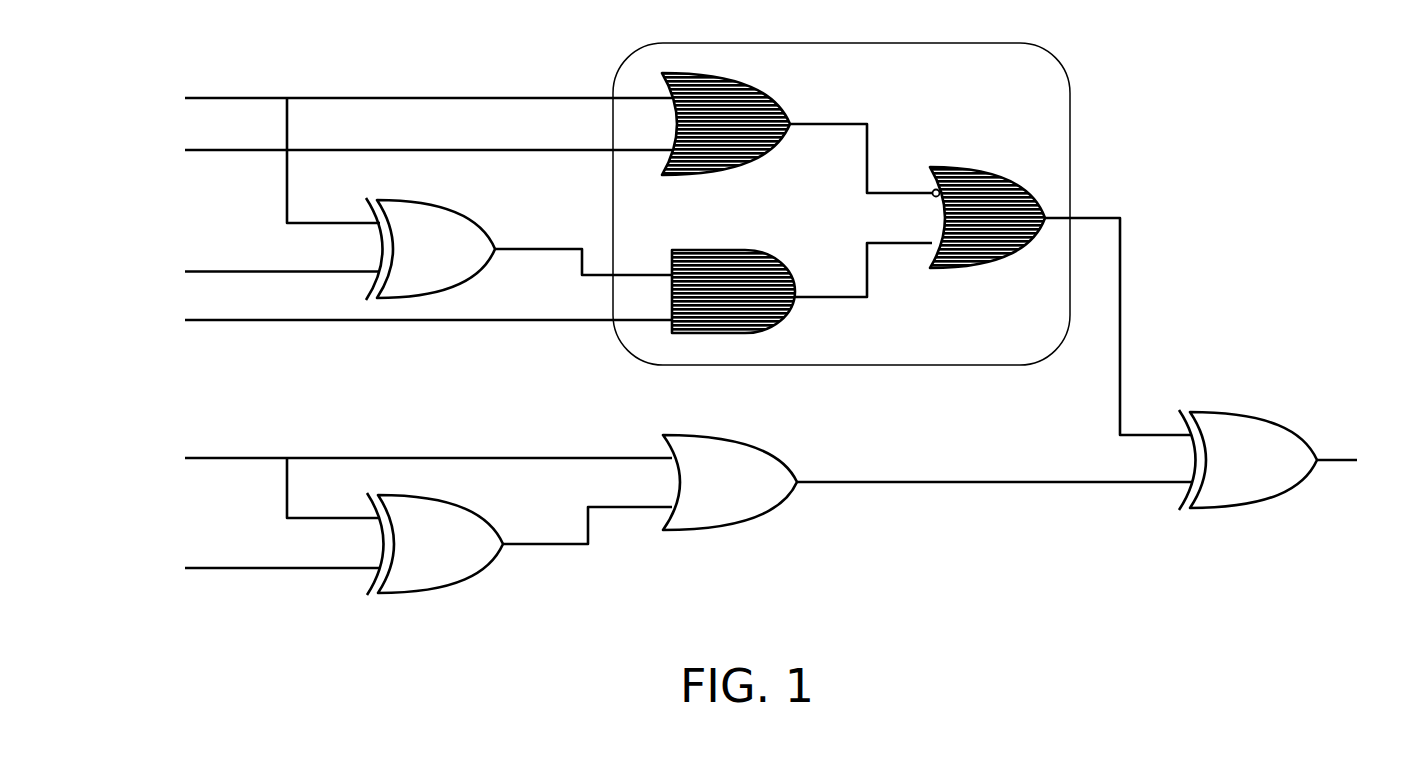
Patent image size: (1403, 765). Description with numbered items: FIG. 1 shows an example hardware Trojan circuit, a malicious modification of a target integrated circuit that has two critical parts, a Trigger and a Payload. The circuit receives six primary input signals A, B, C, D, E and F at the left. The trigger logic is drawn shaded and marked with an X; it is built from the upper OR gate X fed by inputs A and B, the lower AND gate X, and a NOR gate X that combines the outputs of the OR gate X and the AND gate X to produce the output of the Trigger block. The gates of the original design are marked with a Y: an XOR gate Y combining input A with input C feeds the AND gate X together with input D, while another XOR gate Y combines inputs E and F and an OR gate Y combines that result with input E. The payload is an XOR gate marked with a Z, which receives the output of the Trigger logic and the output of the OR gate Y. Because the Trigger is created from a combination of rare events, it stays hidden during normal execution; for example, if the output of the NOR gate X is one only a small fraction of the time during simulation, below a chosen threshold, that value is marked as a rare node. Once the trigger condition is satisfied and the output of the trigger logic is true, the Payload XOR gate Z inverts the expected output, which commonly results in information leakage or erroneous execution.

The input signal A is at (408, 149).
The input signal B is at (408, 149).
The input signal C is at (262, 258).
The input signal D is at (408, 316).
The input signal E is at (408, 475).
The input signal F is at (262, 554).
The trigger logic gates X is at (853, 203).
The gates of the original design Y is at (581, 396).
The payload XOR gate Z is at (1248, 460).
The trigger Trigger is at (841, 204).
The payload Payload is at (1236, 537).